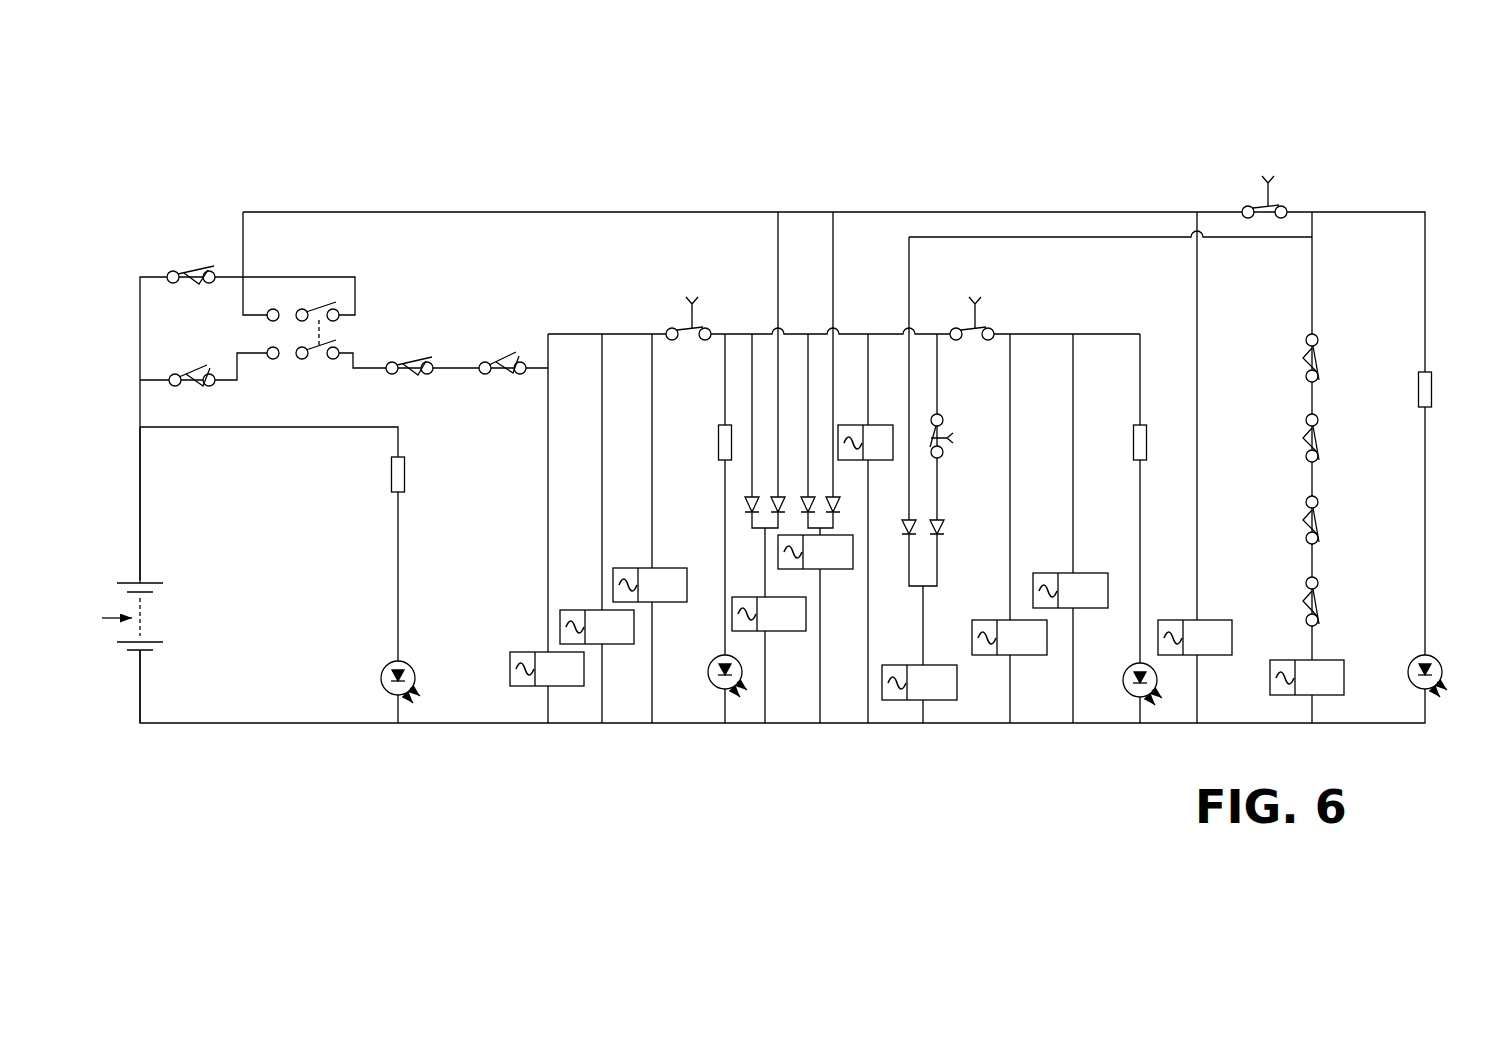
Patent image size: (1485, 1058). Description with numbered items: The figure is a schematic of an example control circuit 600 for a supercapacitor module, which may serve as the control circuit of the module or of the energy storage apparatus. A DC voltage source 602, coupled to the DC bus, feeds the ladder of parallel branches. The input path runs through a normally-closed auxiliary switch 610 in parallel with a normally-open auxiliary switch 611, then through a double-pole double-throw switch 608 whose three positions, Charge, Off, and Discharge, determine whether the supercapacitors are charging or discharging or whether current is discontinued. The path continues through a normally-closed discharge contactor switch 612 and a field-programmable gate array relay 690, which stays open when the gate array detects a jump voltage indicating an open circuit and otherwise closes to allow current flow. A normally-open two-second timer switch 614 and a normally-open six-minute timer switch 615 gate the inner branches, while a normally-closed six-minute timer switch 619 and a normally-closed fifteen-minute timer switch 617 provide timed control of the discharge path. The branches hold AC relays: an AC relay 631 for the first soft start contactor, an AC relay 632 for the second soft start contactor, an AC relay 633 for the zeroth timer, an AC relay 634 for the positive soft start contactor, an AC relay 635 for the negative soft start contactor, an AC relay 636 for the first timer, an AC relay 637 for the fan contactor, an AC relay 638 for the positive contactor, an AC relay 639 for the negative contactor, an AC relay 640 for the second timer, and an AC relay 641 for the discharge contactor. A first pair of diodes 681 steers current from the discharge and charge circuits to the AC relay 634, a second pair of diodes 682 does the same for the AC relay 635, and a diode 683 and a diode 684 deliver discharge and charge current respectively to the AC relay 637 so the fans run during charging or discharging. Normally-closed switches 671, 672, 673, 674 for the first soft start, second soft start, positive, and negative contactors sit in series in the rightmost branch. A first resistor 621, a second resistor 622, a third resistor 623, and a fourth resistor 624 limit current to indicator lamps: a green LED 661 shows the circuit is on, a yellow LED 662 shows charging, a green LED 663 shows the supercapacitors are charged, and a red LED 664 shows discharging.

The control circuit 600 is at (1345, 146).
The DC voltage source 602 is at (182, 610).
The switch 608 is at (300, 376).
The switch 610 is at (168, 268).
The switch 611 is at (192, 393).
The switch 612 is at (420, 387).
The switch 614 is at (666, 320).
The switch 615 is at (993, 321).
The switch 617 is at (1244, 204).
The switch 619 is at (947, 412).
The first resistor 621 is at (412, 470).
The second resistor 622 is at (712, 429).
The third resistor 623 is at (1125, 429).
The fourth resistor 624 is at (1436, 378).
The AC relay 631 is at (536, 643).
The AC relay 632 is at (595, 602).
The AC relay 633 is at (648, 565).
The AC relay 634 is at (785, 640).
The AC relay 635 is at (845, 579).
The AC relay 636 is at (881, 418).
The AC relay 637 is at (906, 706).
The AC relay 638 is at (998, 616).
The AC relay 639 is at (1085, 569).
The AC relay 640 is at (1205, 615).
The AC relay 641 is at (1290, 656).
The green LED 661 is at (386, 656).
The yellow LED 662 is at (715, 650).
The green LED 663 is at (1131, 658).
The red LED 664 is at (1440, 652).
The switch 671 is at (1300, 359).
The switch 672 is at (1300, 440).
The switch 673 is at (1300, 524).
The switch 674 is at (1300, 601).
The first pair of diodes 681 is at (742, 506).
The second pair of diodes 682 is at (843, 503).
The diode 683 is at (904, 522).
The diode 684 is at (947, 529).
The FPGA relay 690 is at (506, 387).